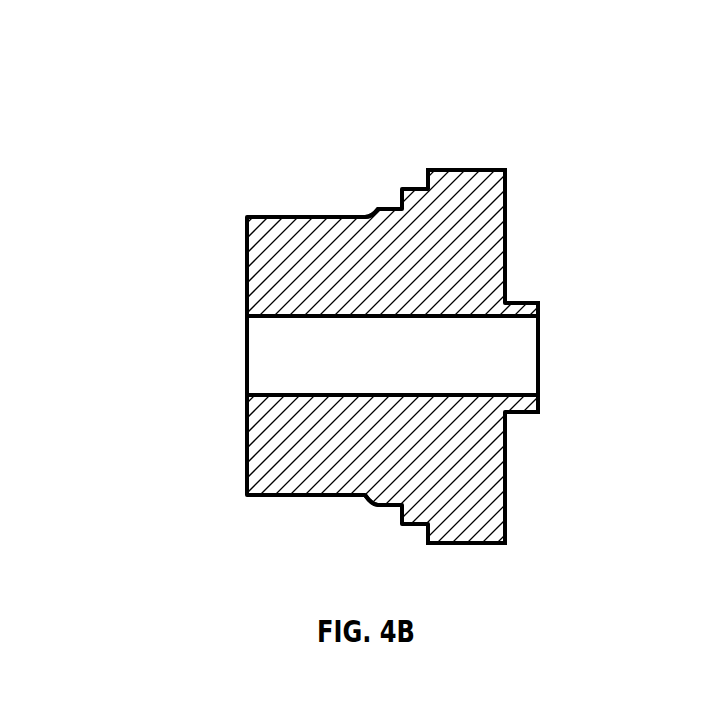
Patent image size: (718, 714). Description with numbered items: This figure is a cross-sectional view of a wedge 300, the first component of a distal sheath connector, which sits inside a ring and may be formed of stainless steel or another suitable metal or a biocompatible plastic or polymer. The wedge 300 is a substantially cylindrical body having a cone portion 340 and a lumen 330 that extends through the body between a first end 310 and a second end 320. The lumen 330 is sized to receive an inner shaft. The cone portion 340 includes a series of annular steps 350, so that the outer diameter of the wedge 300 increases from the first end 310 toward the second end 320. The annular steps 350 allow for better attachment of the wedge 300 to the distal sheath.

The wedge 300 is at (153, 241).
The first end 310 is at (216, 374).
The second end 320 is at (572, 372).
The lumen 330 is at (540, 340).
The cone portion 340 is at (437, 142).
The annular steps 350 is at (398, 207).